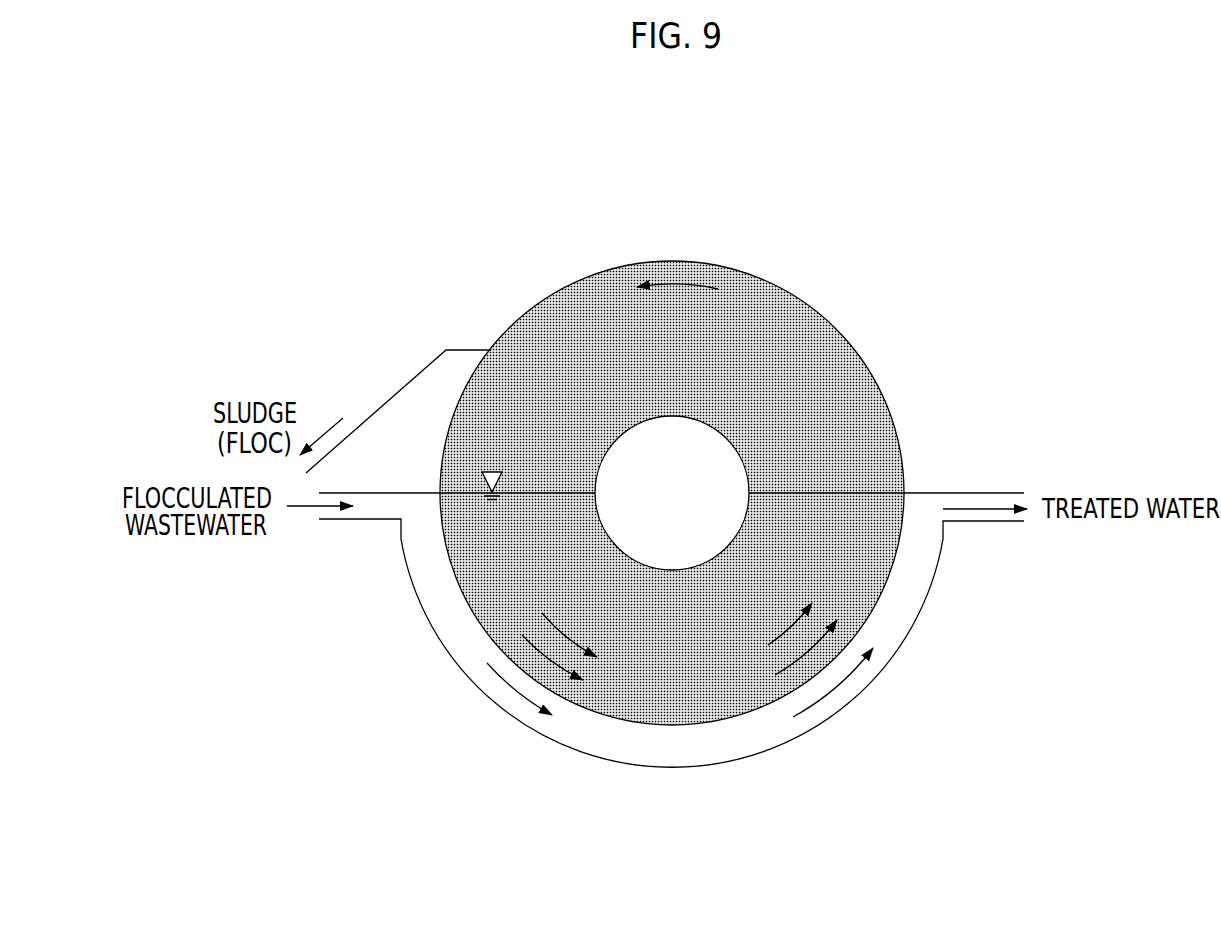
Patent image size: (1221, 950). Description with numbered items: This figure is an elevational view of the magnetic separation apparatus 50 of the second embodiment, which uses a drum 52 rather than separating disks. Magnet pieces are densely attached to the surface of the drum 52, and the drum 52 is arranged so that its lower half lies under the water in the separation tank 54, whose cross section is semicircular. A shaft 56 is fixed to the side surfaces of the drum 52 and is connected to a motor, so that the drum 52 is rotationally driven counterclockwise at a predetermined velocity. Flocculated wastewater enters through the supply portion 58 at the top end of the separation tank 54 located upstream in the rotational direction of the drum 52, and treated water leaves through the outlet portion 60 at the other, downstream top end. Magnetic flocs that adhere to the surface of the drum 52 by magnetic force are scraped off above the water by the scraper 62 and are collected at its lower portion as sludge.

The magnetic separation apparatus 50 is at (657, 468).
The drum 52 is at (675, 268).
The separation tank 54 is at (873, 686).
The shaft 56 is at (635, 540).
The supply portion 58 is at (358, 521).
The outlet portion 60 is at (980, 523).
The scraper 62 is at (398, 395).